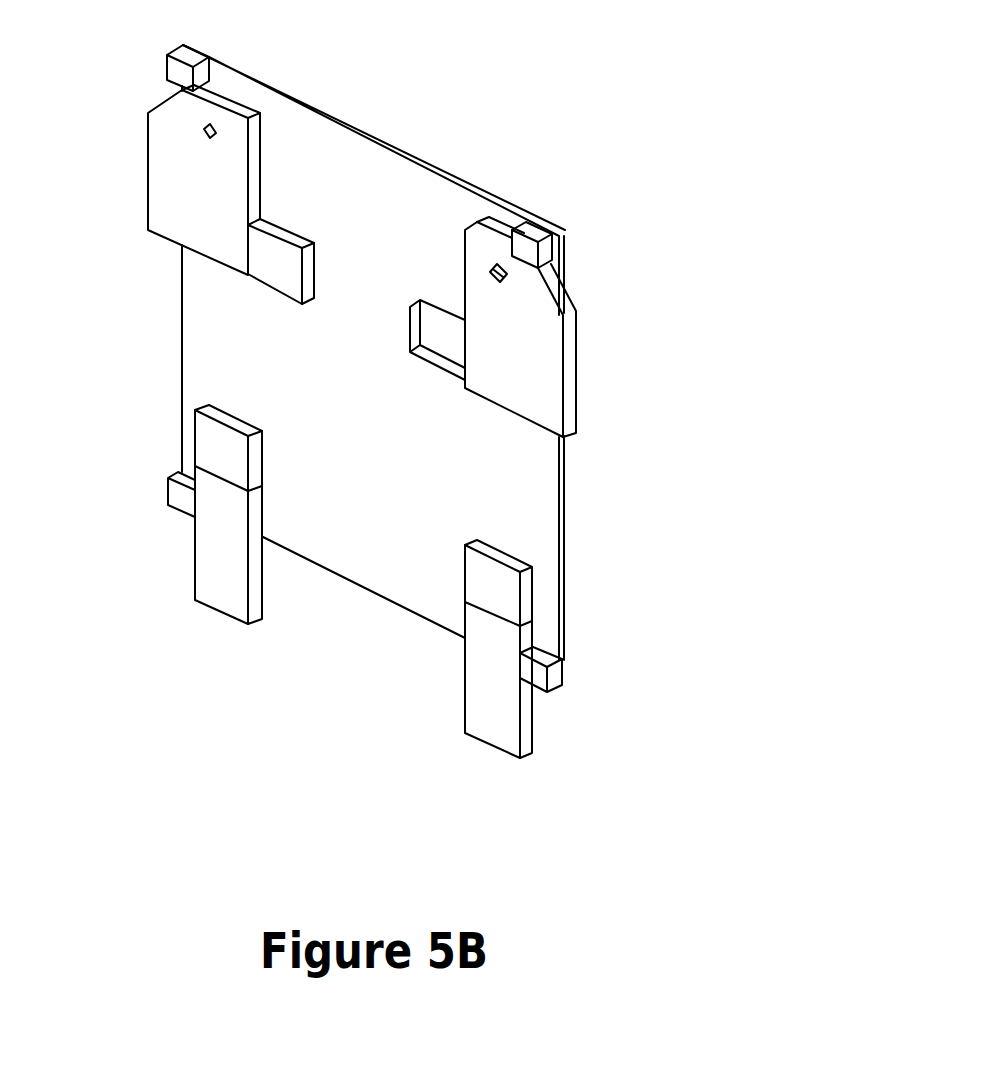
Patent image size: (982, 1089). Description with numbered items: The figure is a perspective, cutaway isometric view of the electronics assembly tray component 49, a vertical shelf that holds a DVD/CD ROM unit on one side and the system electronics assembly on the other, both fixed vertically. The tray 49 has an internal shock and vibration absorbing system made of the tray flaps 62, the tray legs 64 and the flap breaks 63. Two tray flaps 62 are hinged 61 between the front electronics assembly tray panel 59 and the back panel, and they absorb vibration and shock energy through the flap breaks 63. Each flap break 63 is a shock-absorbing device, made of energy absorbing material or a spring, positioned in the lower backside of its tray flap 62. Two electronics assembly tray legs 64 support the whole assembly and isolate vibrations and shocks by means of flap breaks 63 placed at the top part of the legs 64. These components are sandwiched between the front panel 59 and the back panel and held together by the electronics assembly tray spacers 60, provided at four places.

The electronics assembly tray component 49 is at (422, 67).
The front electronics assembly tray panel 59 is at (433, 166).
The electronics assembly tray spacers 60 is at (540, 250).
The hinge 61 is at (200, 132).
The tray flap 62 is at (173, 220).
The flap break 63 is at (205, 443).
The electronics assembly tray leg 64 is at (207, 570).